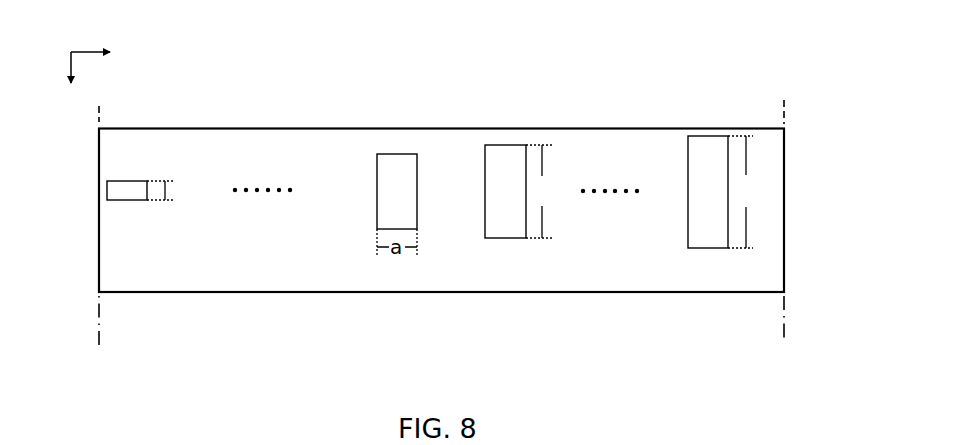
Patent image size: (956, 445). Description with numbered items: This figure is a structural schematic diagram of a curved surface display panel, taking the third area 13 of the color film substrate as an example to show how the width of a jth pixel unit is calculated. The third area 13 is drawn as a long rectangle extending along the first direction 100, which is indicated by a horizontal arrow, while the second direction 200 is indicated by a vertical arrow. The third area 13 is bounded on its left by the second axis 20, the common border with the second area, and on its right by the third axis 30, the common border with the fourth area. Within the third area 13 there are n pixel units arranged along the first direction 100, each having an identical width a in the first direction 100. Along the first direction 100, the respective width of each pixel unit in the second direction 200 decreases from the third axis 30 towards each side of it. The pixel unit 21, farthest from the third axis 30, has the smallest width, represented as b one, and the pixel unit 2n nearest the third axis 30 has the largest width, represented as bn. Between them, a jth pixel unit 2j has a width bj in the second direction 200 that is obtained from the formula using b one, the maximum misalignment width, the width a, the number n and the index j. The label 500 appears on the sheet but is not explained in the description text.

The first direction 100 is at (91, 37).
The second direction 200 is at (45, 67).
The second axis 20 is at (99, 213).
The third axis 30 is at (782, 209).
The light guide plate 500 is at (843, 49).
The third area 13 is at (380, 292).
The pixel unit 21 is at (127, 200).
The jth pixel unit 2j is at (505, 238).
The pixel unit 2n is at (707, 248).